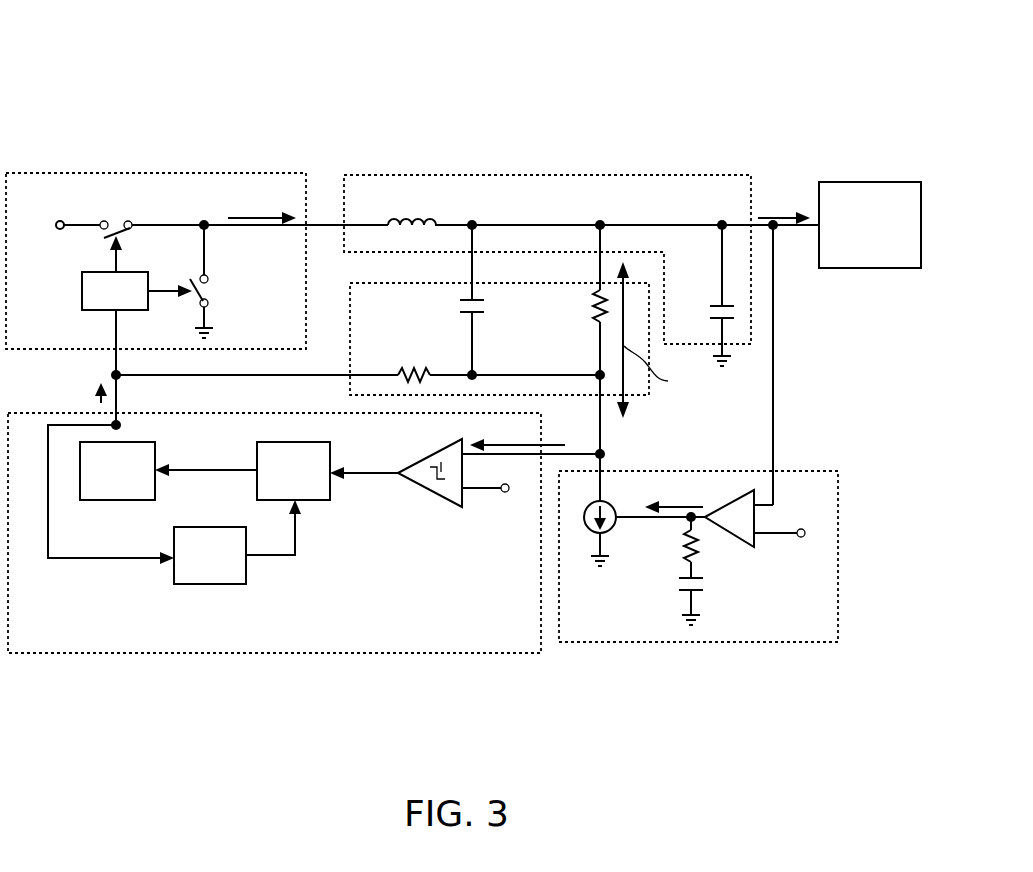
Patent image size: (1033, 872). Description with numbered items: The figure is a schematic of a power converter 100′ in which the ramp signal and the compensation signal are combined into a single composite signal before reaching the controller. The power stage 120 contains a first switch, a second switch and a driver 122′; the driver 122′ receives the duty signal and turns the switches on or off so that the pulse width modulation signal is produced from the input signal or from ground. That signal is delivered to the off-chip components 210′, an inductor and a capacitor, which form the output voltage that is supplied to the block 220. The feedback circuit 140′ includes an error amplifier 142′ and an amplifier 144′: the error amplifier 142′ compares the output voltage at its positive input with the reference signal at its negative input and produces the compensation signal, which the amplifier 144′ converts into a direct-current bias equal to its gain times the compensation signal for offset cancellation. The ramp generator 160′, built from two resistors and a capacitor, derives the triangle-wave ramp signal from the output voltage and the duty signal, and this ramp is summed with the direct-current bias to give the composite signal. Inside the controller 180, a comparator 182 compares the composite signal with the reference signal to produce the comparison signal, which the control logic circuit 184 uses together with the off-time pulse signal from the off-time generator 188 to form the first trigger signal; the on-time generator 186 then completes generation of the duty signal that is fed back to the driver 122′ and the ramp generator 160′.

The power converter 100′ is at (116, 70).
The power stage 120 is at (227, 173).
The driver 122′ is at (137, 291).
The off-chip components 210′ is at (692, 175).
The load 220 is at (870, 225).
The ramp generator 160′ is at (649, 395).
The controller 180 is at (340, 653).
The comparator 182 is at (430, 490).
The control logic circuit 184 is at (293, 471).
The on-time generator 186 is at (117, 471).
The off-time generator 188 is at (210, 555).
The feedback circuit 140′ is at (762, 642).
The error amplifier 142′ is at (750, 547).
The amplifier 144′ is at (588, 530).